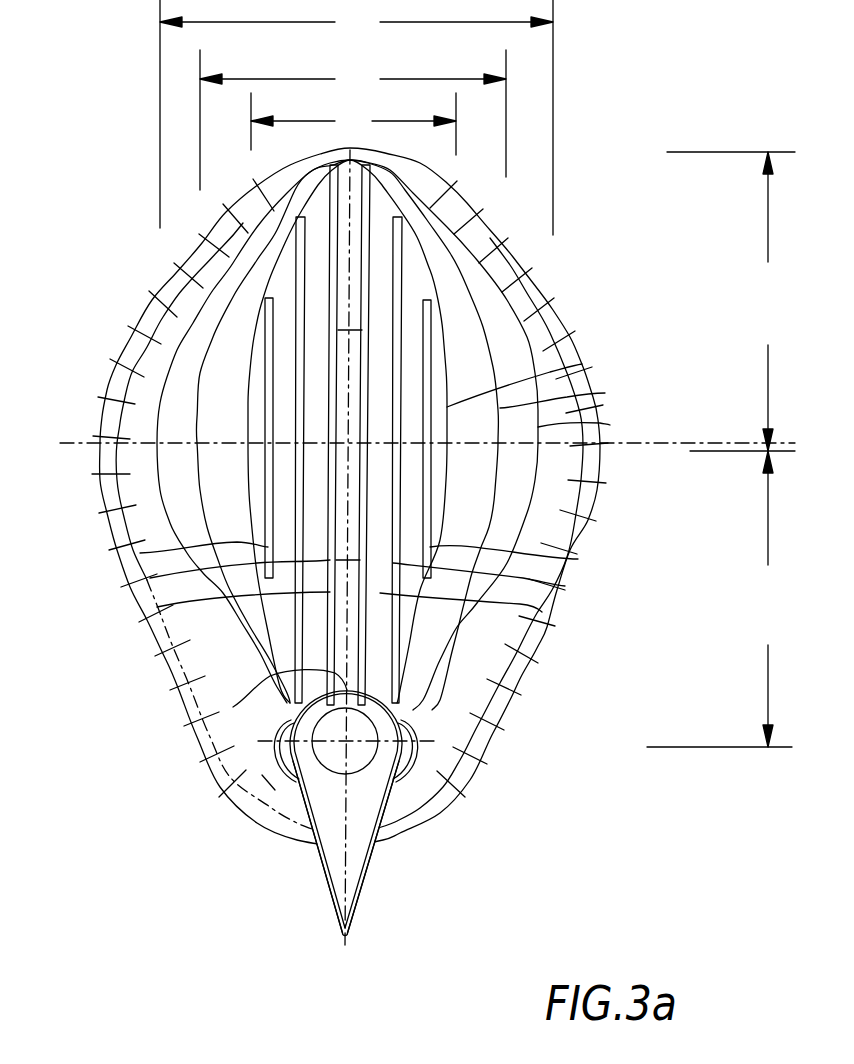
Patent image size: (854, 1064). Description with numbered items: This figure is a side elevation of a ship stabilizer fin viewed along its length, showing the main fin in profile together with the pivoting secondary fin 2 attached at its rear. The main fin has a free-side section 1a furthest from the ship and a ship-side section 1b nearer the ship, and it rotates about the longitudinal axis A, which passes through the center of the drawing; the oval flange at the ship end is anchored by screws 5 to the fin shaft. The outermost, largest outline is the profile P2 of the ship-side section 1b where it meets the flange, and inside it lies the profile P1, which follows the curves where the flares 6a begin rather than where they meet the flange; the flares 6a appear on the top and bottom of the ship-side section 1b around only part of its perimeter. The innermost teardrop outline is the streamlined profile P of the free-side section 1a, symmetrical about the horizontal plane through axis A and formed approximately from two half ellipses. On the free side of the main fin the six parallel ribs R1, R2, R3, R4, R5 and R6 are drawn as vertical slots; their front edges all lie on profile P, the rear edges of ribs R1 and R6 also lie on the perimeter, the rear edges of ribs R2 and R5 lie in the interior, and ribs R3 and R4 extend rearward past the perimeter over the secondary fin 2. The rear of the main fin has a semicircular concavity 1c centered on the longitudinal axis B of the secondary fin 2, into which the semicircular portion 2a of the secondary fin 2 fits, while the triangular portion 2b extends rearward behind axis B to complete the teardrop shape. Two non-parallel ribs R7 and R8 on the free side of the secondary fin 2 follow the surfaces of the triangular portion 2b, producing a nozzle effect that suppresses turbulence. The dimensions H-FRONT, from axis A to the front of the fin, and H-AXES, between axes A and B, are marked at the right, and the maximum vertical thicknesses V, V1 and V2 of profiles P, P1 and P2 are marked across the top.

The screws 5 is at (243, 223).
The free-side section 1a is at (465, 250).
The ship-side section 1b is at (532, 312).
The semicircular concavity 1c is at (233, 707).
The secondary fin 2 is at (288, 808).
The semicircular portion 2a is at (273, 718).
The triangular portion 2b is at (336, 851).
The flares 6a is at (177, 420).
The longitudinal axis A is at (348, 442).
The longitudinal axis B is at (262, 775).
The profile P is at (582, 364).
The profile P1 is at (605, 393).
The profile P2 is at (610, 425).
The rib R1 is at (578, 559).
The rib R2 is at (565, 586).
The rib R3 is at (542, 612).
The rib R4 is at (157, 607).
The rib R5 is at (150, 578).
The rib R6 is at (140, 553).
The rib R7 is at (367, 885).
The rib R8 is at (330, 895).
The maximum vertical thickness V is at (353, 124).
The maximum vertical thickness V1 is at (353, 120).
The maximum vertical thickness V2 is at (356, 117).
The distance H-FRONT is at (731, 301).
The distance H-AXES is at (719, 599).